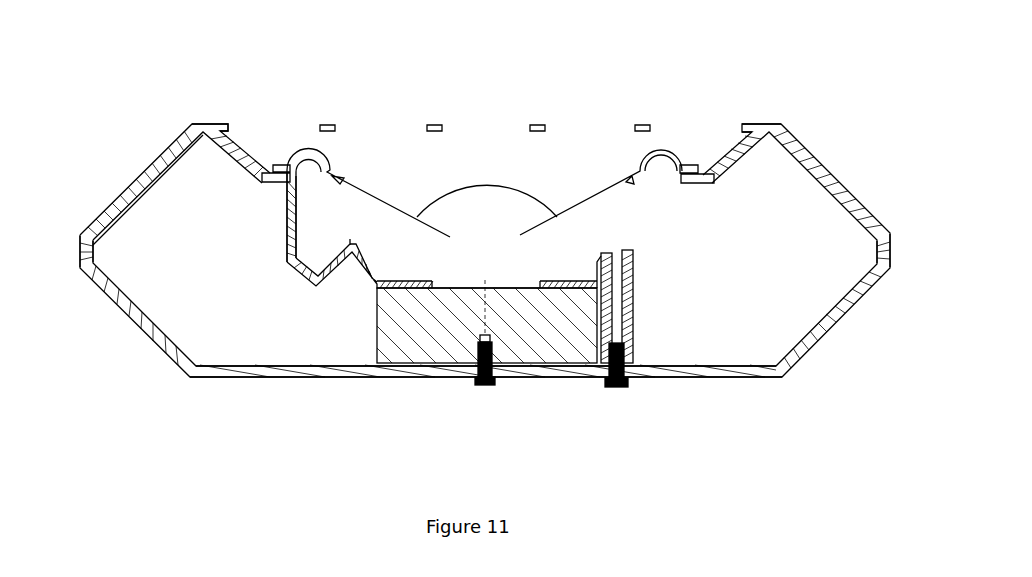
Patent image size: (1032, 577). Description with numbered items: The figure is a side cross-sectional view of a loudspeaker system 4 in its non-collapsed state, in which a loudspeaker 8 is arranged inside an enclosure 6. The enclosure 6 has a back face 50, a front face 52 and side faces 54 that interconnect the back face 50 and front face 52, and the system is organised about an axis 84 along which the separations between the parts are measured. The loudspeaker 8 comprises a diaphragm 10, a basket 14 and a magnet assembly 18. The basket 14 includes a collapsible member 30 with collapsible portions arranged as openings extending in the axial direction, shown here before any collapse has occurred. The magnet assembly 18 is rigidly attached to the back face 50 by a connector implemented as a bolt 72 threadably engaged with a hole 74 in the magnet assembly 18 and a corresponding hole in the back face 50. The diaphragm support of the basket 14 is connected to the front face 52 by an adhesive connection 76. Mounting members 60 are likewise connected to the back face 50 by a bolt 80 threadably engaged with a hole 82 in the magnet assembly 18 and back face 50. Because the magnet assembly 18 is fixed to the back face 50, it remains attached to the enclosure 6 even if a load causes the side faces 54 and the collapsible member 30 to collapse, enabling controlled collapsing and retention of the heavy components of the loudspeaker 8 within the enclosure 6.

The loudspeaker system 4 is at (761, 105).
The enclosure 6 is at (153, 328).
The loudspeaker 8 is at (280, 150).
The diaphragm 10 is at (585, 197).
The basket 14 is at (225, 169).
The magnet assembly 18 is at (563, 345).
The collapsible member 30 is at (251, 258).
The back face 50 is at (322, 373).
The front face 52 is at (215, 122).
The side faces 54 is at (843, 317).
The mounting members 60 is at (621, 322).
The bolt 72 is at (477, 385).
The hole 74 is at (490, 330).
The adhesive connection 76 is at (703, 167).
The bolt 80 is at (618, 389).
The hole 82 is at (618, 265).
The axis 84 is at (485, 228).